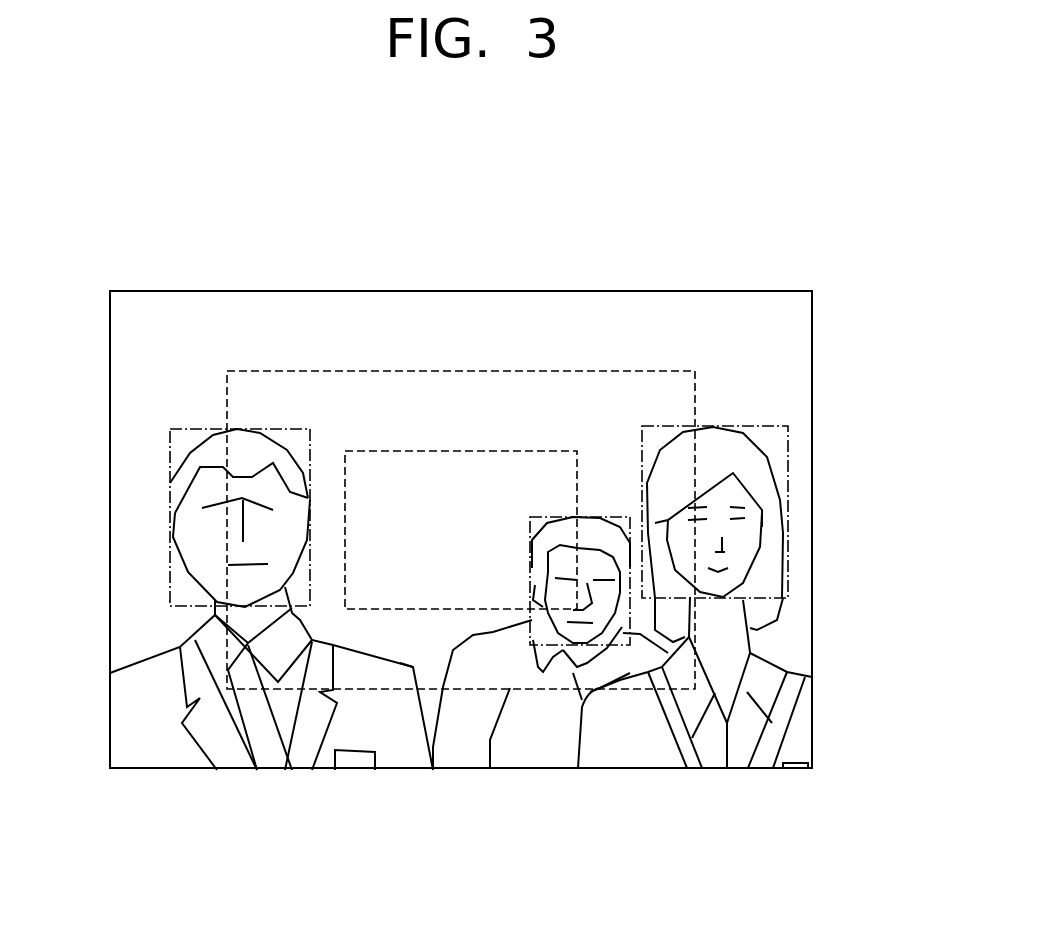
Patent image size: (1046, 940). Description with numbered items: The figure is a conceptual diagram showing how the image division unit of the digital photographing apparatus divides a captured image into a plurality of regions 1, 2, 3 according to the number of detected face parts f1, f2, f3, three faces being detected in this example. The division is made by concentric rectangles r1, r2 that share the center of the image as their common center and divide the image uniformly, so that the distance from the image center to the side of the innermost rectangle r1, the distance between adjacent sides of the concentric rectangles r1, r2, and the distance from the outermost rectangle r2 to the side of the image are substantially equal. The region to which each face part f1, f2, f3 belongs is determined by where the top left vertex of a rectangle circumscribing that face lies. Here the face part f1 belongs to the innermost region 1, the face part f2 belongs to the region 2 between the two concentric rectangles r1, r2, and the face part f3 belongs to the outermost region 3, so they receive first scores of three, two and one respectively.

The innermost region 1 is at (408, 473).
The region between the two concentric rectangles 2 is at (443, 422).
The outermost region 3 is at (507, 336).
The innermost rectangle r1 is at (529, 450).
The outermost rectangle r2 is at (638, 368).
The face part f1 is at (530, 570).
The face part f2 is at (789, 493).
The face part f3 is at (170, 566).